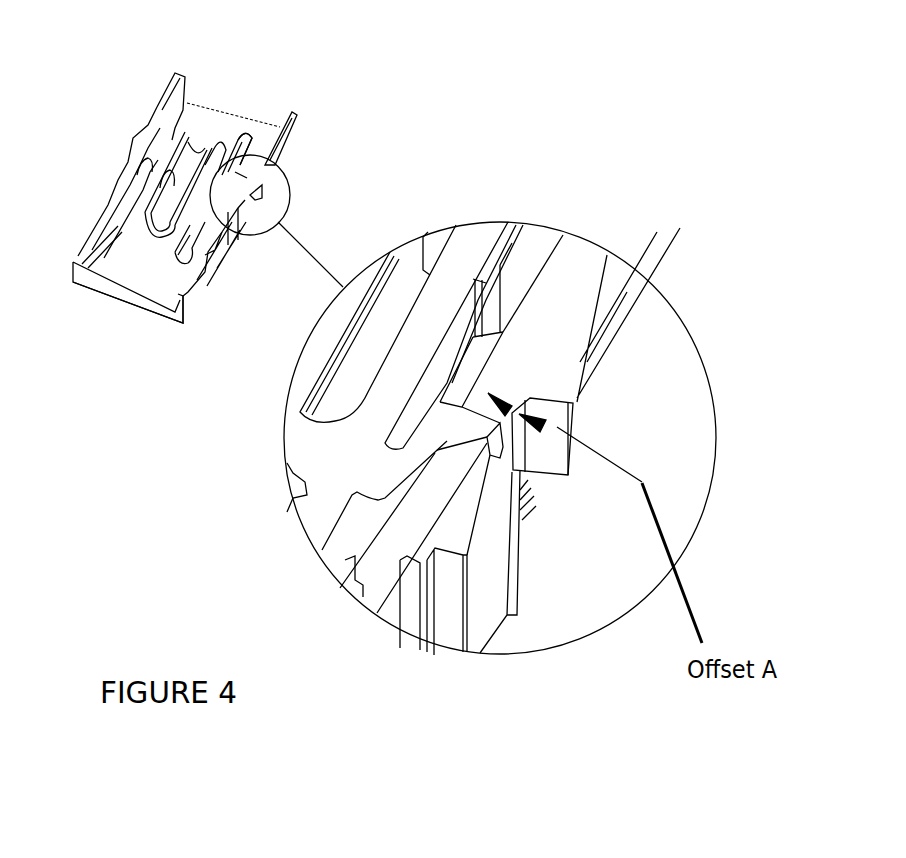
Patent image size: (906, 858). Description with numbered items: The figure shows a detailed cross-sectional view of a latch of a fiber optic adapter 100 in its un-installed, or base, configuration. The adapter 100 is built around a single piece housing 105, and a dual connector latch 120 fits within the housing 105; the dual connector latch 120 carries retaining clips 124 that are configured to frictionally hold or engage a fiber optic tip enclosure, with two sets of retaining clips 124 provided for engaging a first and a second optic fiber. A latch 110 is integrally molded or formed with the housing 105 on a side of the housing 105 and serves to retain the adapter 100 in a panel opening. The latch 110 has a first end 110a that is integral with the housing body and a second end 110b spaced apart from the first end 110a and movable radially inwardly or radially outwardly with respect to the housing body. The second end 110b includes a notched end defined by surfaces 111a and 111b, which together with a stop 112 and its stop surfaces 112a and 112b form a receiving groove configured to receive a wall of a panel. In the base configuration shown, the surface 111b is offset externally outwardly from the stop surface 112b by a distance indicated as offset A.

The adapter 100 is at (118, 92).
The retaining clips 124 is at (240, 133).
The first end 110a is at (265, 160).
The second end 110b is at (247, 178).
The dual connector latch 120 is at (178, 255).
The housing 105 is at (185, 298).
The latch 110 is at (555, 305).
The surface 111a is at (555, 422).
The surface 111b is at (517, 447).
The stop 112 is at (471, 527).
The stop surface 112a is at (500, 458).
The stop surface 112b is at (490, 444).